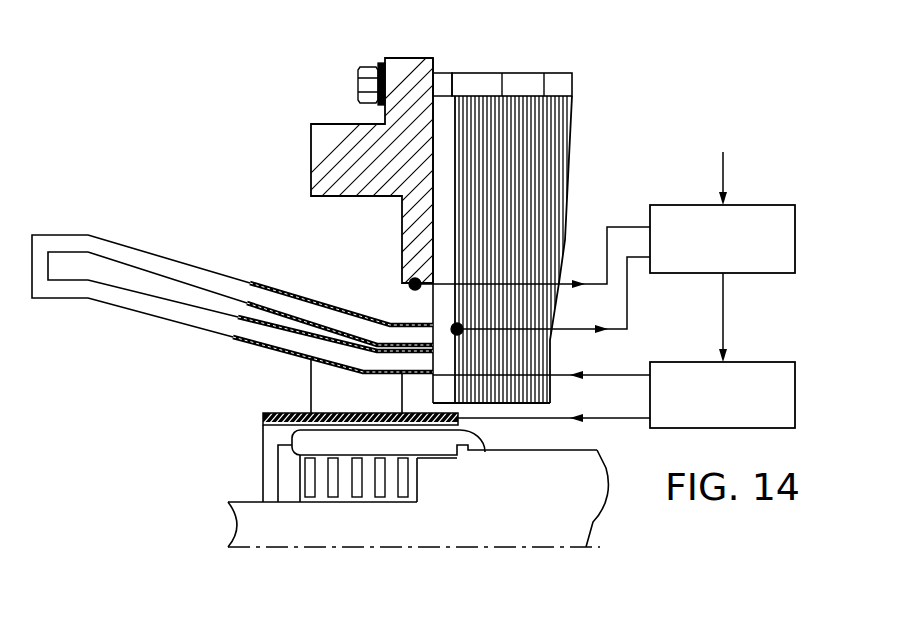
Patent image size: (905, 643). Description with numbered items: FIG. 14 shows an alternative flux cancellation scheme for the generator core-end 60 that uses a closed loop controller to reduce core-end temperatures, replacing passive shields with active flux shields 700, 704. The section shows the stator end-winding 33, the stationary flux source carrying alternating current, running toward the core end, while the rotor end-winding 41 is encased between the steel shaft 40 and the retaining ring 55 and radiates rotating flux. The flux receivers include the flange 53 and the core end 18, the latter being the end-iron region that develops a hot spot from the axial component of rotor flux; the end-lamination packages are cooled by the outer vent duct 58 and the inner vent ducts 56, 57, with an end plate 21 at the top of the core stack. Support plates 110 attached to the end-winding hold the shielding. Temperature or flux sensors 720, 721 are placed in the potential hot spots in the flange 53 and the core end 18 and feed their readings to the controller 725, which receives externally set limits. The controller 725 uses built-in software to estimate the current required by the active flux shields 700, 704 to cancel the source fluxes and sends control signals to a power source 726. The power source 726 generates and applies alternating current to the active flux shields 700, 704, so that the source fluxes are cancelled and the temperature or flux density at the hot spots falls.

The core end 18 is at (455, 213).
The top plate 21 is at (574, 79).
The stator end-winding 33 is at (105, 240).
The steel shaft 40 is at (312, 503).
The rotor end-winding 41 is at (360, 478).
The flange 53 is at (311, 158).
The retaining ring 55 is at (292, 441).
The inner vent duct 56 is at (502, 73).
The inner vent duct 57 is at (544, 73).
The outer vent duct 58 is at (447, 102).
The core-end 60 is at (576, 183).
The support plate 110 is at (311, 382).
The active flux shield 700 is at (262, 411).
The active flux shield 704 is at (367, 313).
The temperature or flux sensor 720 is at (413, 289).
The temperature or flux sensor 721 is at (457, 331).
The controller 725 is at (676, 207).
The power source 726 is at (680, 360).